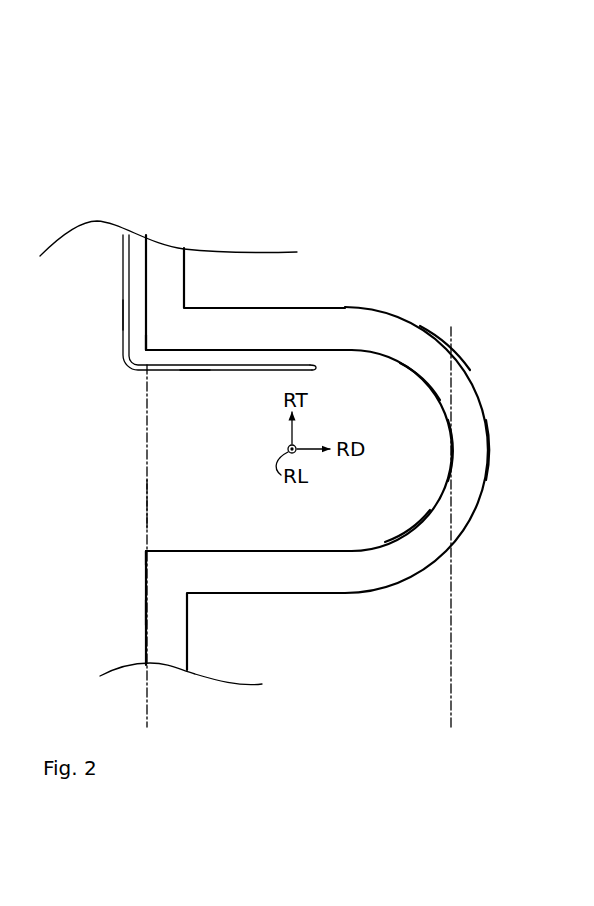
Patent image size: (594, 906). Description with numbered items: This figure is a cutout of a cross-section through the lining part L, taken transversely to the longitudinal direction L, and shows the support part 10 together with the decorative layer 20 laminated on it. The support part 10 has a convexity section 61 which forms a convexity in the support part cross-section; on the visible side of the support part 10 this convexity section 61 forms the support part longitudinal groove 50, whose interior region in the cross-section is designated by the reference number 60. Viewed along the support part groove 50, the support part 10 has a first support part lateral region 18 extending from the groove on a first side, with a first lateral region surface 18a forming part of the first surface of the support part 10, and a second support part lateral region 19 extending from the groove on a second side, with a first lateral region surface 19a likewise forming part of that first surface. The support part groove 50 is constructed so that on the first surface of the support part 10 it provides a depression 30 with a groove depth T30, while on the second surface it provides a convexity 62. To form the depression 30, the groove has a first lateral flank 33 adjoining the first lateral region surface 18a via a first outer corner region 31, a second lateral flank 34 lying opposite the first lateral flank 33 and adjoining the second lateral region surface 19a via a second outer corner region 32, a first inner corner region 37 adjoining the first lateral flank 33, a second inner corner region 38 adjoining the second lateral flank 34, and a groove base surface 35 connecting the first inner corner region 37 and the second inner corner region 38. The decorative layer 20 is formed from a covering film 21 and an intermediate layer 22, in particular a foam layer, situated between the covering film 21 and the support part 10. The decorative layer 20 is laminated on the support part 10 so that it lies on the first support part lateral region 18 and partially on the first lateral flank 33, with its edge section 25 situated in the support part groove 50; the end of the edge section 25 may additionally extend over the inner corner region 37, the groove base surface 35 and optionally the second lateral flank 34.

The support part 10 is at (315, 421).
The first support part lateral region 18 is at (146, 262).
The first lateral region surface 18a is at (181, 298).
The second support part lateral region 19 is at (146, 646).
The first lateral region surface of second lateral region 19a is at (145, 613).
The decorative layer 20 is at (117, 323).
The covering film 21 is at (217, 371).
The intermediate layer 22 is at (250, 364).
The edge section 25 is at (185, 380).
The depression 30 is at (432, 458).
The first outer corner region 31 is at (142, 349).
The second outer corner region 32 is at (148, 550).
The first lateral flank 33 is at (332, 351).
The second lateral flank 34 is at (293, 548).
The groove base surface 35 is at (449, 425).
The first inner corner region 37 is at (418, 377).
The second inner corner region 38 is at (406, 533).
The support part longitudinal groove 50 is at (145, 505).
The interior region 60 is at (190, 458).
The convexity section 61 is at (494, 490).
The convexity 62 is at (479, 333).
The longitudinal direction L is at (369, 133).
The groove depth T30 is at (450, 709).